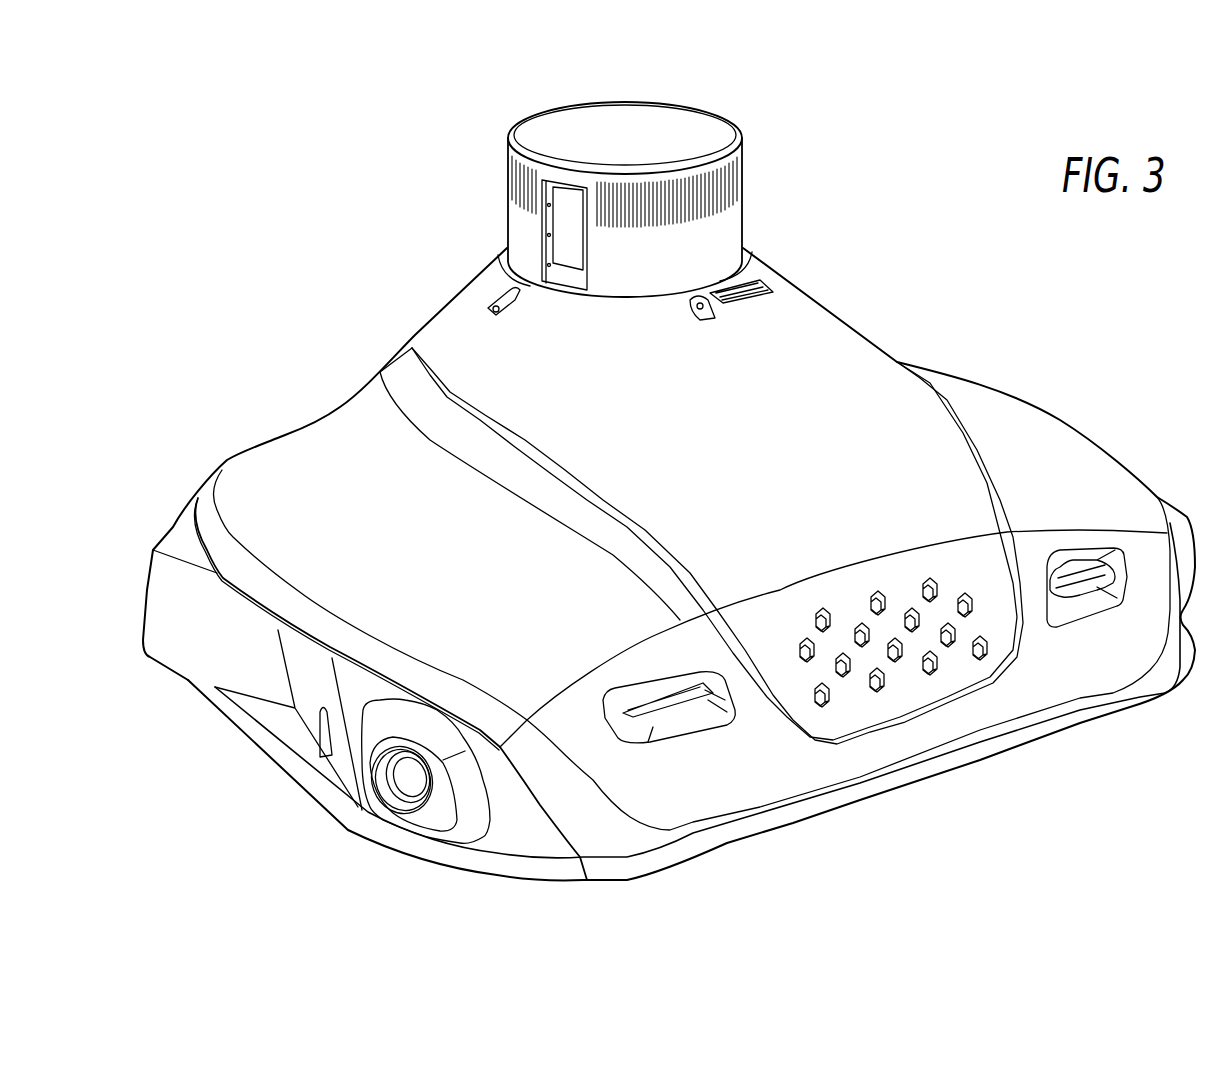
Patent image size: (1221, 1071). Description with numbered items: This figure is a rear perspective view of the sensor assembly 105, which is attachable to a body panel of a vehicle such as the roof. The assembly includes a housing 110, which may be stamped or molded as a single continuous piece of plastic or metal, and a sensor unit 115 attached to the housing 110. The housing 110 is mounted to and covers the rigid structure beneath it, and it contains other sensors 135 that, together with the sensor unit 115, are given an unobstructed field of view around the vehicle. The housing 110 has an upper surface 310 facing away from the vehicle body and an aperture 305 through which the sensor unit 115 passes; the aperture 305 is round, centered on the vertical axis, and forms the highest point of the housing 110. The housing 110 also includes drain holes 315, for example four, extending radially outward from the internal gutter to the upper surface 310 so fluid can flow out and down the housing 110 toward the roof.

The sensor assembly 105 is at (857, 83).
The housing 110 is at (802, 323).
The sensor unit 115 is at (557, 130).
The other sensors 135 is at (408, 787).
The aperture 305 is at (720, 277).
The upper surface 310 is at (937, 460).
The drain holes 315 is at (512, 300).